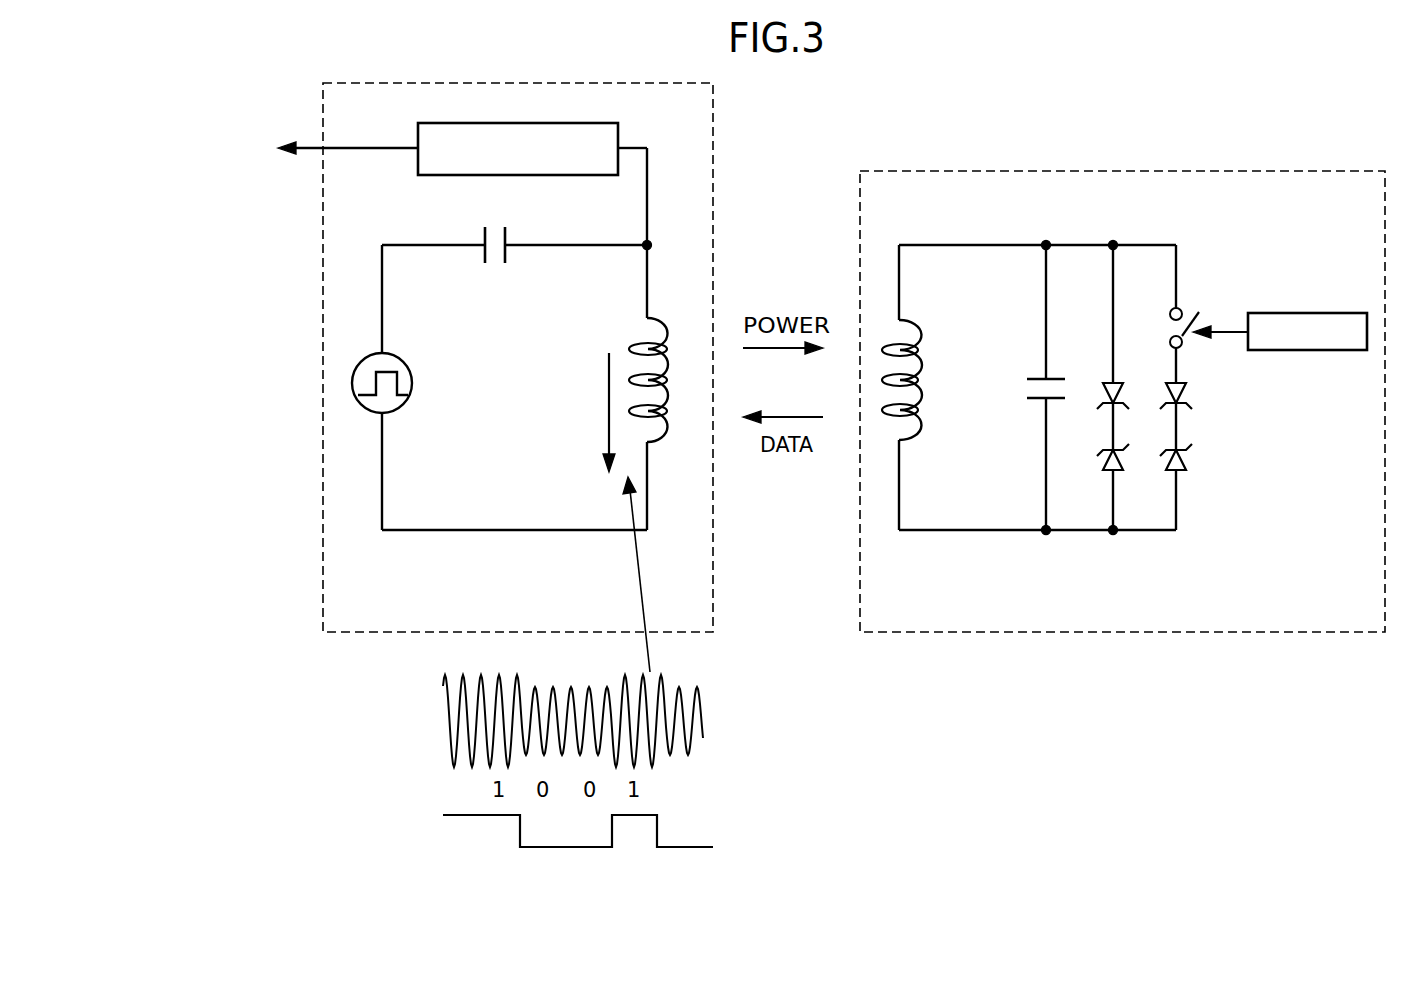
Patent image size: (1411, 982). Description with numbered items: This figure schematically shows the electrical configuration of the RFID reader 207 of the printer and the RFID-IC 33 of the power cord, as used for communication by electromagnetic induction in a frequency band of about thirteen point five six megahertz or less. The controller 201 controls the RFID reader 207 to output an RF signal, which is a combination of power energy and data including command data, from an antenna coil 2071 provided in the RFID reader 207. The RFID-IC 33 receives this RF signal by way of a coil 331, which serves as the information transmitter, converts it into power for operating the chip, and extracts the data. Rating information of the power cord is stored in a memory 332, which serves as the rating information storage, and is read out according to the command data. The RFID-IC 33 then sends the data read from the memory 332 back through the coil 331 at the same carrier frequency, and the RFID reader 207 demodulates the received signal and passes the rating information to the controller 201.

The RFID reader 207 is at (470, 82).
The antenna coil 2071 is at (645, 347).
The controller 201 is at (254, 166).
The RFID-IC 33 is at (1290, 170).
The coil 331 is at (912, 431).
The memory 332 is at (1320, 313).